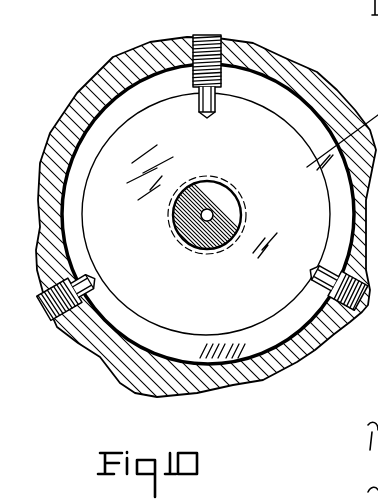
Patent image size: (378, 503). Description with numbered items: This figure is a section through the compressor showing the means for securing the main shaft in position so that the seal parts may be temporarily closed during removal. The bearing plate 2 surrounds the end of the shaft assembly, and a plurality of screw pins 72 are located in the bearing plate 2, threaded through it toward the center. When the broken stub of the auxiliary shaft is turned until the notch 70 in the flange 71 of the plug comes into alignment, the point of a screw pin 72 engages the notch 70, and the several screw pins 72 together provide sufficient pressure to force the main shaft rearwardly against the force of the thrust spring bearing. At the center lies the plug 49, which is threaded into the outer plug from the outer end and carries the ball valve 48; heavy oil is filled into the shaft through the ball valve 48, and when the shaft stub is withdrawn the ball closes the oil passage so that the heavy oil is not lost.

The bearing plate 2 is at (323, 102).
The flange 71 is at (262, 118).
The screw pin 72 is at (231, 68).
The notch 70 is at (214, 100).
The plug 49 is at (206, 194).
The ball valve 48 is at (212, 214).